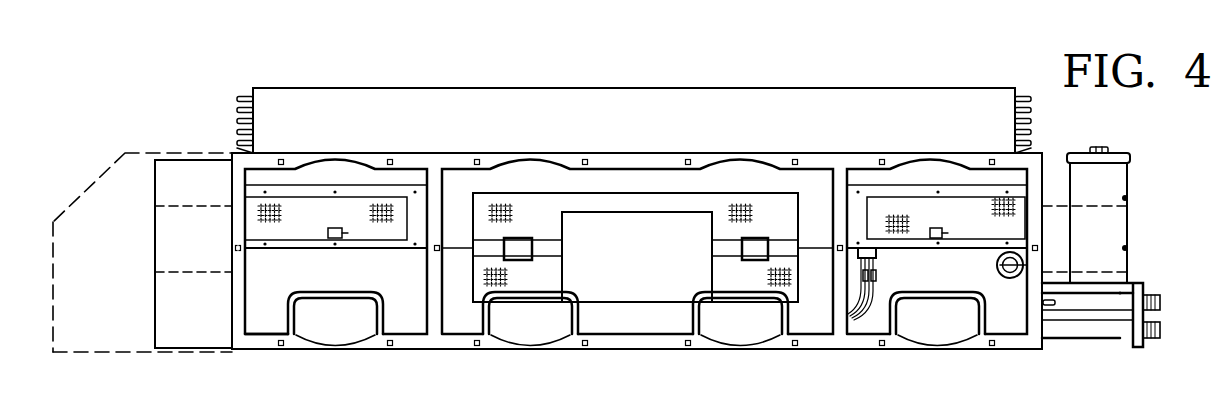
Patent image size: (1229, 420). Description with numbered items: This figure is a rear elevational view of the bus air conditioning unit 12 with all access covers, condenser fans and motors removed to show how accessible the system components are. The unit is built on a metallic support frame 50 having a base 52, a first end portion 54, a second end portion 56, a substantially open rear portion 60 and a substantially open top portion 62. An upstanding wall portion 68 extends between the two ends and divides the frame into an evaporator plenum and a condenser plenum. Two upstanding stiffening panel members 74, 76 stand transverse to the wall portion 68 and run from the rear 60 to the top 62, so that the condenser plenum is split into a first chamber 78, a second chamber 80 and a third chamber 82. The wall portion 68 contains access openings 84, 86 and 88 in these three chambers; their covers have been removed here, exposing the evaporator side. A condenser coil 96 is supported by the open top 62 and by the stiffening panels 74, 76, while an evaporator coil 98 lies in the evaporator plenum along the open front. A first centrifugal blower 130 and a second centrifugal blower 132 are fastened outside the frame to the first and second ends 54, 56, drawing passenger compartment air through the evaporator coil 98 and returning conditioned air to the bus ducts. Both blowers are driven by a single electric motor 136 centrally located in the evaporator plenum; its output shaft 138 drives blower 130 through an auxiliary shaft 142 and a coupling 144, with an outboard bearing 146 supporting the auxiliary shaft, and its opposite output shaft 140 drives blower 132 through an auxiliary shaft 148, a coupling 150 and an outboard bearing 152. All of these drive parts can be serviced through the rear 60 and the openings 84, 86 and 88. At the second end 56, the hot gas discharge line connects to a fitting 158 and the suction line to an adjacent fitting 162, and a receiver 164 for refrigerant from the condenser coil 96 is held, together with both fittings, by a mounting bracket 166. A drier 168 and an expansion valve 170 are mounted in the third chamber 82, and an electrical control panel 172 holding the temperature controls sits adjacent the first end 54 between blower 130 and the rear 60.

The bus air conditioning unit 12 is at (86, 145).
The support frame 50 is at (428, 343).
The base 52 is at (635, 347).
The first end portion 54 is at (228, 318).
The second end portion 56 is at (1043, 302).
The rear portion 60 is at (243, 340).
The top portion 62 is at (637, 153).
The upstanding wall portion 68 is at (873, 322).
The stiffening panel member 74 is at (426, 272).
The stiffening panel member 76 is at (832, 273).
The first chamber 78 is at (265, 330).
The second chamber 80 is at (816, 334).
The third chamber 82 is at (1013, 326).
The access opening 84 is at (316, 243).
The access opening 86 is at (585, 198).
The access opening 88 is at (897, 198).
The condenser coil 96 is at (252, 90).
The evaporator coil 98 is at (760, 205).
The first centrifugal blower 130 is at (155, 219).
The second centrifugal blower 132 is at (1050, 168).
The electric motor 136 is at (633, 292).
The output shaft 138 is at (555, 249).
The output shaft 140 is at (717, 251).
The auxiliary shaft 142 is at (485, 247).
The coupling 144 is at (520, 247).
The outboard bearing 146 is at (345, 234).
The auxiliary shaft 148 is at (787, 247).
The coupling 150 is at (750, 252).
The outboard bearing 152 is at (940, 232).
The fitting 158 is at (1160, 301).
The fitting 162 is at (1163, 333).
The receiver 164 is at (1128, 177).
The mounting bracket 166 is at (1134, 283).
The drier 168 is at (997, 266).
The expansion valve 170 is at (875, 275).
The electrical control panel 172 is at (86, 353).